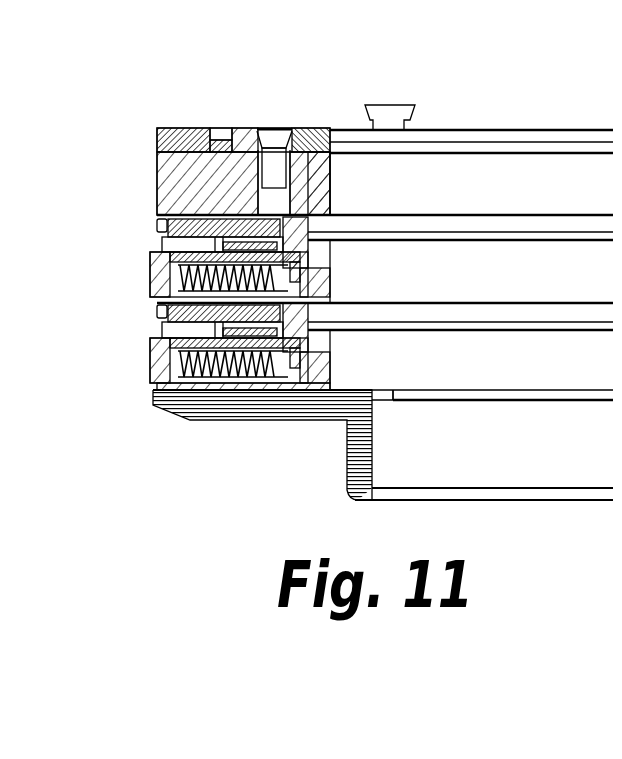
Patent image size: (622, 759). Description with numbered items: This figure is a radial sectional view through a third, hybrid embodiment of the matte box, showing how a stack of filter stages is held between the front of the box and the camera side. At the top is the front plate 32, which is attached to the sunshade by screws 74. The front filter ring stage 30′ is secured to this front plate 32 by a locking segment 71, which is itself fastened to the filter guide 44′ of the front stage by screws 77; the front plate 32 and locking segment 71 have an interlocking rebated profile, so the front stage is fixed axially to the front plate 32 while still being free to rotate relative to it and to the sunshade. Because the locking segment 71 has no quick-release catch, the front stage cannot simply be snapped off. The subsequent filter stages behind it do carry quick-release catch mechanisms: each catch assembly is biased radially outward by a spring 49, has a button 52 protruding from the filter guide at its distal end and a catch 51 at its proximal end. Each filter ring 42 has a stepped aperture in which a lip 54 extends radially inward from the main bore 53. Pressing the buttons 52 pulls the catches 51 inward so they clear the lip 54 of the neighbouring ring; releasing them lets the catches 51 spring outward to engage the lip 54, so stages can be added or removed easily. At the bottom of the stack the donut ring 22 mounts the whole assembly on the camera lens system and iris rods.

The donut ring 22 is at (348, 440).
The front filter ring stage 30′ is at (160, 217).
The front plate 32 is at (175, 132).
The filter ring 42 is at (160, 330).
The filter guide 44′ is at (175, 200).
The spring 49 is at (158, 236).
The catch 51 is at (320, 203).
The button 52 is at (148, 281).
The main bore 53 is at (298, 300).
The lip 54 is at (310, 335).
The locking segment 71 is at (228, 138).
The screw 74 is at (377, 105).
The screw 77 is at (283, 135).